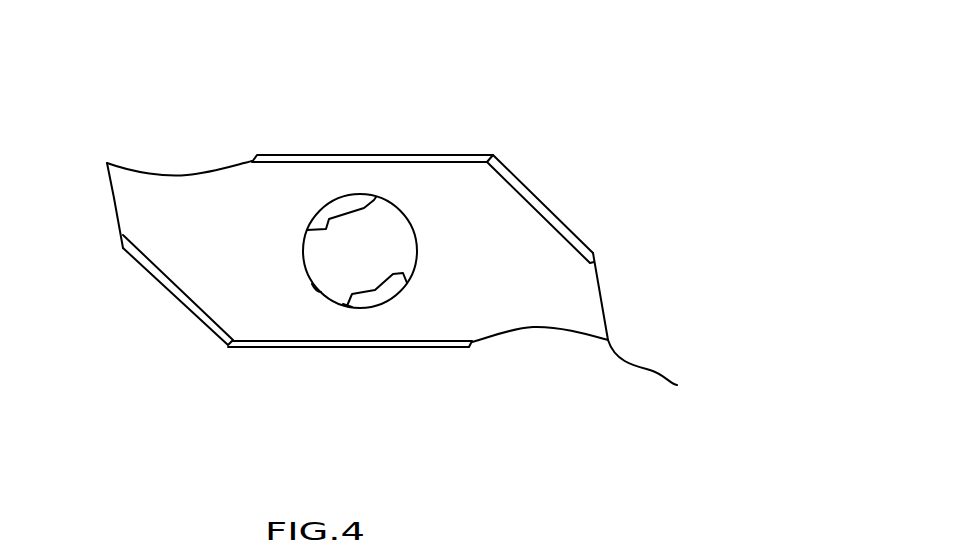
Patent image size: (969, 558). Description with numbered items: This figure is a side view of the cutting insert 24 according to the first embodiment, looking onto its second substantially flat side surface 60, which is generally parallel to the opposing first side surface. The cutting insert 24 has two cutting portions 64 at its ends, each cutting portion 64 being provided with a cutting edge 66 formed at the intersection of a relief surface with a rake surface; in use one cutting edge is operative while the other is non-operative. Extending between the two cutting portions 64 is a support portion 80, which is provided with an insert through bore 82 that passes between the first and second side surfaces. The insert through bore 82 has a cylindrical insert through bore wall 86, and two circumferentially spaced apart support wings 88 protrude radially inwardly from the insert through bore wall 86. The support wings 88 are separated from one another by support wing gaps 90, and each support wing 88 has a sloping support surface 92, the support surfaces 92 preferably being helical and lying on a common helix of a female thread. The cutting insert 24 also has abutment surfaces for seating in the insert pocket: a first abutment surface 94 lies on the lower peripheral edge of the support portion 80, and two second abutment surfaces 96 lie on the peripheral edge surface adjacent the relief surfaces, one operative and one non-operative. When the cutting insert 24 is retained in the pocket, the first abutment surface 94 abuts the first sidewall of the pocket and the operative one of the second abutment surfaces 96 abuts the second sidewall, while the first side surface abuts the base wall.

The cutting insert 24 is at (546, 60).
The second substantially flat side surface 60 is at (203, 283).
The cutting portions 64 is at (174, 138).
The cutting edge 66 is at (107, 163).
The support portion 80 is at (330, 118).
The insert through bore 82 is at (323, 294).
The insert through bore wall 86 is at (352, 308).
The support wings 88 is at (323, 218).
The support wing gaps 90 is at (400, 229).
The sloping support surface 92 is at (352, 205).
The first abutment surface 94 is at (250, 348).
The second abutment surfaces 96 is at (545, 203).